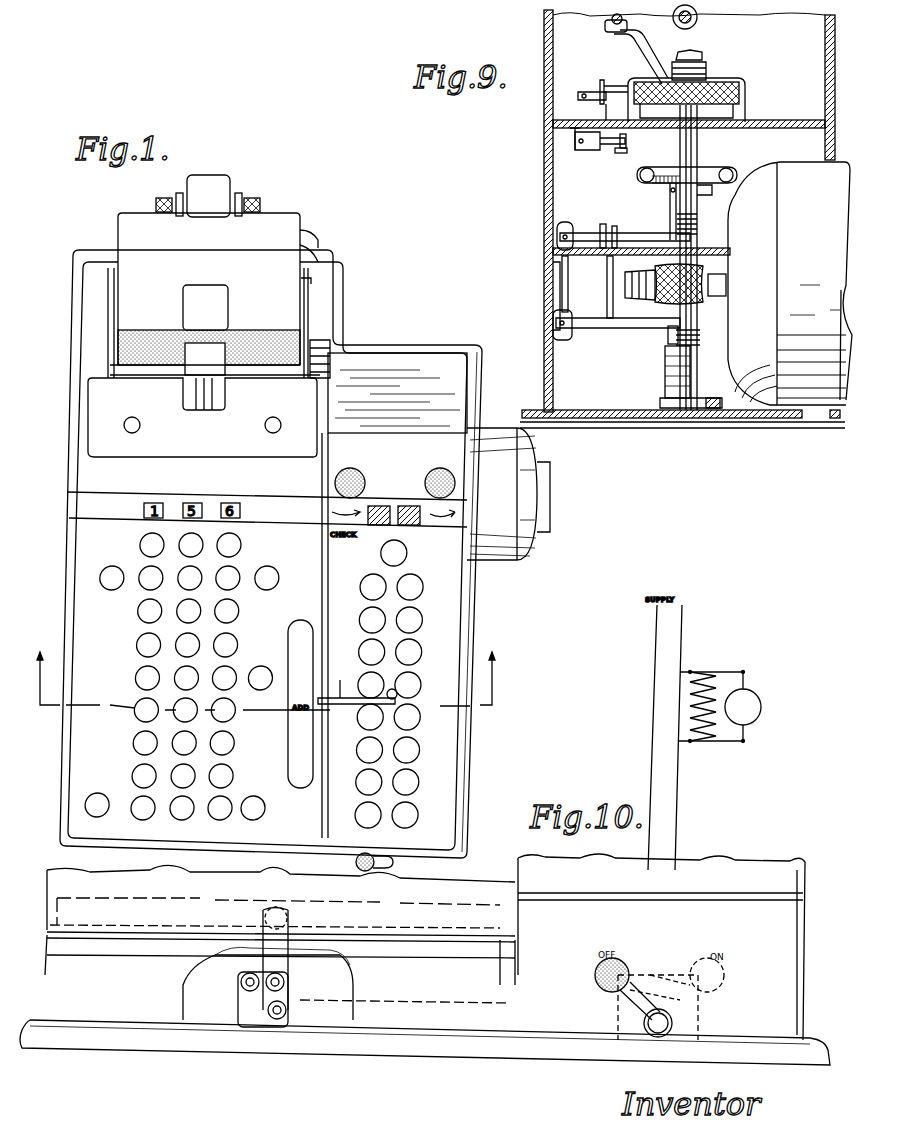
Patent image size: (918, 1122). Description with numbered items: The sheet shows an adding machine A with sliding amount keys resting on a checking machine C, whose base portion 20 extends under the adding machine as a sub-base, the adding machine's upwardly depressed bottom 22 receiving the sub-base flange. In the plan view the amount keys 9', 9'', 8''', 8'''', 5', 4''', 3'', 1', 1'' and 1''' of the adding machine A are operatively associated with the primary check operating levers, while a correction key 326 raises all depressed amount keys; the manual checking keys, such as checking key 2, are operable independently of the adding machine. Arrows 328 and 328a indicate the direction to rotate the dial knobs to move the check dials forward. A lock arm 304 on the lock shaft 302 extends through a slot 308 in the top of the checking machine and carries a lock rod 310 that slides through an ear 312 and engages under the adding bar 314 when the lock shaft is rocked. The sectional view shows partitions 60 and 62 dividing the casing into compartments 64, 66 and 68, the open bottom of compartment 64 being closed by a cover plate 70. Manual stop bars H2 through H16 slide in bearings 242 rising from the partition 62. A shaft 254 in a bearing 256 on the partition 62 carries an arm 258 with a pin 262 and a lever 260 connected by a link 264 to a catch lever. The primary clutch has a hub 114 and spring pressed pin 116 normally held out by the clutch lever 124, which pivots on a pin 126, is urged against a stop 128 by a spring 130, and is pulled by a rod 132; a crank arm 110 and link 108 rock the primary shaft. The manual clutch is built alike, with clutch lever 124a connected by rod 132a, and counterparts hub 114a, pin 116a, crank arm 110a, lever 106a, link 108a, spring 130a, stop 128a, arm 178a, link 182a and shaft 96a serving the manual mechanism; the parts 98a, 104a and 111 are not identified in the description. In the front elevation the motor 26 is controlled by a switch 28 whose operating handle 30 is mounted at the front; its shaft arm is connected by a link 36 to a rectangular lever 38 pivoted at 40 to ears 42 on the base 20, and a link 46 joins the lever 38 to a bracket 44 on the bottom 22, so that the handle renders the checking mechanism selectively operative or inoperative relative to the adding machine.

In FIG. 1, the base portion 20 is at (340, 262).
In FIG. 9, the base portion 20 is at (800, 430).
In FIG. 10, the base portion 20 is at (425, 1040).
In FIG. 1, the adding machine A is at (90, 556).
In FIG. 10, the adding machine A is at (217, 890).
In FIG. 1, the checking machine C is at (452, 590).
In FIG. 9, the checking machine C is at (835, 40).
In FIG. 10, the checking machine C is at (712, 870).
In FIG. 1, the checking key 2 is at (263, 693).
In FIG. 1, the amount key 9' is at (126, 542).
In FIG. 1, the amount key 9'' is at (172, 561).
In FIG. 1, the amount key 8''' is at (257, 548).
In FIG. 1, the amount key 8'''' is at (252, 597).
In FIG. 1, the amount key 5' is at (125, 693).
In FIG. 1, the amount key 4''' is at (248, 721).
In FIG. 1, the amount key 3'' is at (203, 765).
In FIG. 1, the amount key 1' is at (155, 827).
In FIG. 1, the amount key 1'' is at (196, 827).
In FIG. 1, the amount key 1''' is at (241, 826).
In FIG. 1, the correction key 326 is at (265, 670).
In FIG. 1, the adding bar 314 is at (301, 704).
In FIG. 1, the lock rod 310 is at (345, 679).
In FIG. 1, the slot 308 is at (392, 689).
In FIG. 1, the lock arm 304 is at (405, 706).
In FIG. 1, the ear 312 is at (340, 712).
In FIG. 1, the arrow 328 is at (455, 514).
In FIG. 1, the arrow 328a is at (332, 512).
In FIG. 9, the compartment 68 is at (544, 42).
In FIG. 9, the partition 62 is at (760, 128).
In FIG. 9, the compartment 66 is at (545, 175).
In FIG. 9, the compartment 64 is at (545, 358).
In FIG. 9, the cover plate 70 is at (675, 430).
In FIG. 9, the lock shaft 302 is at (697, 20).
In FIG. 9, the link 182a is at (607, 22).
In FIG. 9, the arm 178a is at (650, 55).
In FIG. 9, the shaft 96a is at (702, 56).
In FIG. 9, the threaded sleeve 104a is at (706, 74).
In FIG. 9, the bearings 242 is at (745, 90).
In FIG. 9, the manual stop bar H16 is at (745, 104).
In FIG. 9, the manual stop bar H2 is at (645, 86).
In FIG. 9, the pin 262 is at (602, 80).
In FIG. 9, the arm 258 is at (582, 92).
In FIG. 9, the partition 60 is at (697, 240).
In FIG. 9, the shaft 254 is at (585, 150).
In FIG. 9, the bearing 256 is at (575, 150).
In FIG. 9, the lever 260 is at (626, 140).
In FIG. 9, the link 264 is at (627, 152).
In FIG. 9, the lever 106a is at (730, 180).
In FIG. 9, the link 108a is at (722, 170).
In FIG. 9, the shaft portion 98a is at (697, 140).
In FIG. 9, the spring pressed pin 116a is at (712, 192).
In FIG. 9, the crank arm 110a is at (668, 200).
In FIG. 9, the clutch lever 124a is at (630, 222).
In FIG. 9, the rod 132a is at (630, 232).
In FIG. 9, the hub 114a is at (677, 228).
In FIG. 9, the spring 130a is at (600, 260).
In FIG. 9, the stop 128a is at (600, 278).
In FIG. 9, the pin 126 is at (560, 285).
In FIG. 9, the stop 128 is at (655, 295).
In FIG. 9, the spring 130 is at (625, 300).
In FIG. 9, the rod 132 is at (575, 330).
In FIG. 9, the clutch lever 124 is at (655, 328).
In FIG. 9, the hub 114 is at (680, 345).
In FIG. 9, the spring pressed pin 116 is at (700, 338).
In FIG. 9, the pin 111 is at (700, 345).
In FIG. 9, the crank arm 110 is at (690, 358).
In FIG. 9, the link 108 is at (705, 398).
In FIG. 10, the motor 26 is at (761, 707).
In FIG. 10, the operating handle 30 is at (622, 962).
In FIG. 10, the switch 28 is at (700, 1022).
In FIG. 10, the upwardly depressed bottom 22 is at (335, 922).
In FIG. 10, the bracket 44 is at (288, 915).
In FIG. 10, the link 46 is at (275, 958).
In FIG. 10, the link 36 is at (335, 985).
In FIG. 10, the ears 42 is at (282, 998).
In FIG. 10, the pivot 40 is at (277, 1019).
In FIG. 10, the lever 38 is at (250, 1008).